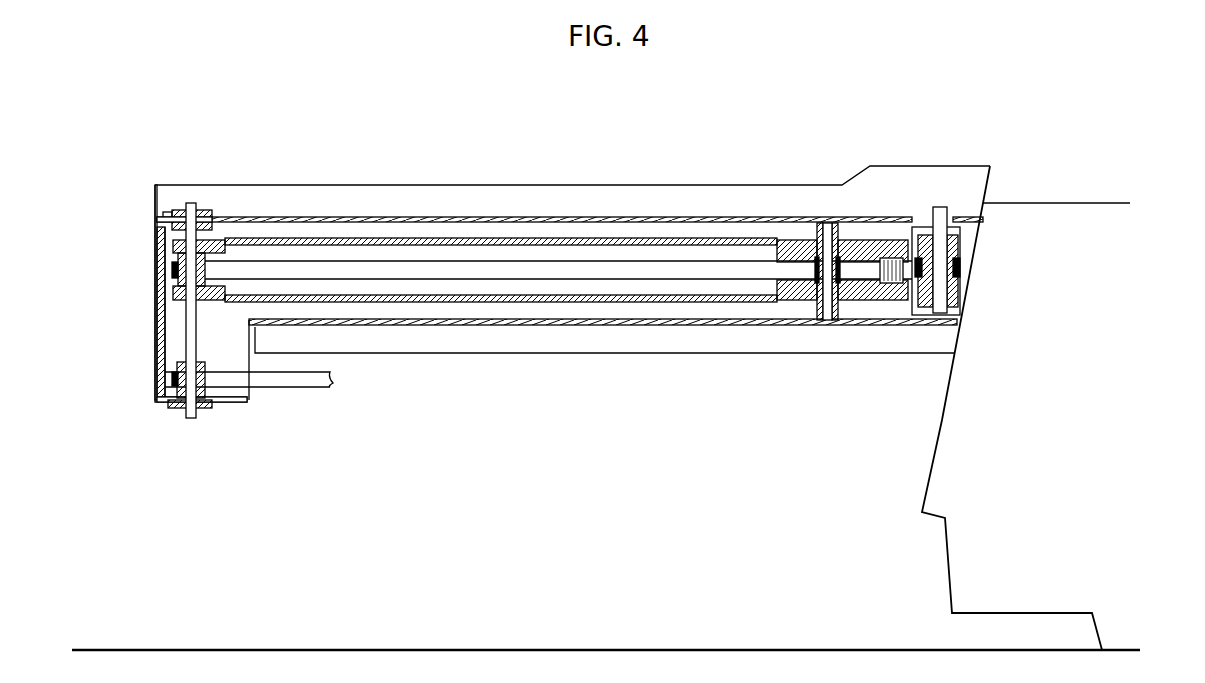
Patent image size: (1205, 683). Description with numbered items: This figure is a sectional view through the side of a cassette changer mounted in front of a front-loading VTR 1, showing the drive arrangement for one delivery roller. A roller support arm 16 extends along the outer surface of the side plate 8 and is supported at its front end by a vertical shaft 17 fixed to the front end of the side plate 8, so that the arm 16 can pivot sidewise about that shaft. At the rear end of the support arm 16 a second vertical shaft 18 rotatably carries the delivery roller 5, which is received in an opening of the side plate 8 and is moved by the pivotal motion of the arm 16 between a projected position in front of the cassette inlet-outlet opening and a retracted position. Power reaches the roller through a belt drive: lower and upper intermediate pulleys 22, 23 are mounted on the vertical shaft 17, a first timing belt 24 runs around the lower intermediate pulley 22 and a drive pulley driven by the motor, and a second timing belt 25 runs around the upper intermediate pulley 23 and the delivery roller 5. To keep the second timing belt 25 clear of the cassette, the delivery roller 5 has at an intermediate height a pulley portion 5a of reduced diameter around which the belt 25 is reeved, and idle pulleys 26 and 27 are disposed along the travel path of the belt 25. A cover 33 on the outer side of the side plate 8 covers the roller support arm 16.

The VTR 1 is at (1088, 408).
The delivery roller 5 is at (960, 247).
The pulley portion 5a is at (963, 272).
The side plate 8 is at (155, 312).
The roller support arm 16 is at (590, 238).
The vertical shaft 17 is at (190, 203).
The vertical shaft 18 is at (946, 207).
The lower intermediate pulley 22 is at (172, 360).
The upper intermediate pulley 23 is at (172, 260).
The first timing belt 24 is at (277, 388).
The second timing belt 25 is at (687, 268).
The idle pulley 26 is at (897, 262).
The idle pulley 27 is at (838, 268).
The cover 33 is at (378, 220).